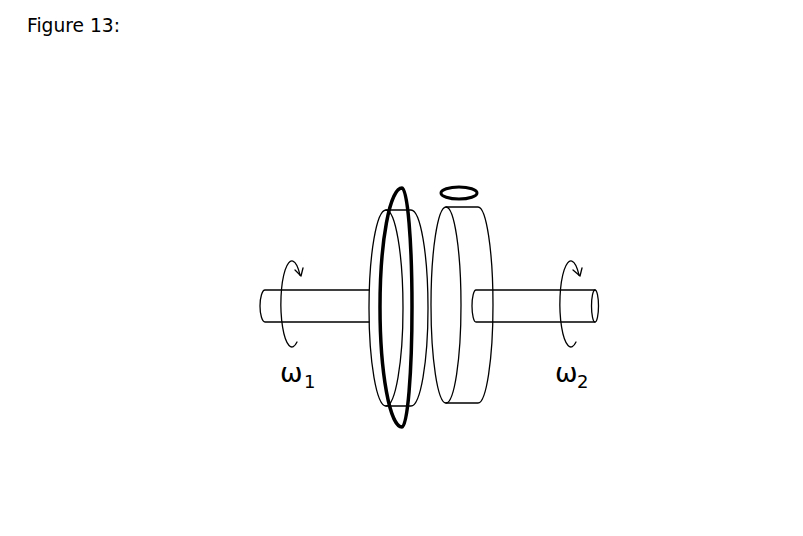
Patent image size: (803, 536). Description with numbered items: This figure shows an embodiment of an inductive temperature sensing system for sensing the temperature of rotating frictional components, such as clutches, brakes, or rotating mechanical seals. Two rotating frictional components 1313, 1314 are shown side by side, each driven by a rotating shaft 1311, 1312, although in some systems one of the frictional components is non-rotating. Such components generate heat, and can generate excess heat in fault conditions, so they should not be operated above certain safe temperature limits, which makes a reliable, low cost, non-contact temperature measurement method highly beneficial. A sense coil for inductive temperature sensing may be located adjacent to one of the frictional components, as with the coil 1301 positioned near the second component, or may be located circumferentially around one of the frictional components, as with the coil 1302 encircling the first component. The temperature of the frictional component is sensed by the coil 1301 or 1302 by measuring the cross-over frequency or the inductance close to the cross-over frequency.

The sense coil 1301 is at (474, 190).
The sense coil 1302 is at (397, 192).
The rotating shaft 1311 is at (272, 314).
The rotating shaft 1312 is at (581, 307).
The rotating frictional component 1313 is at (380, 392).
The rotating frictional component 1314 is at (455, 390).